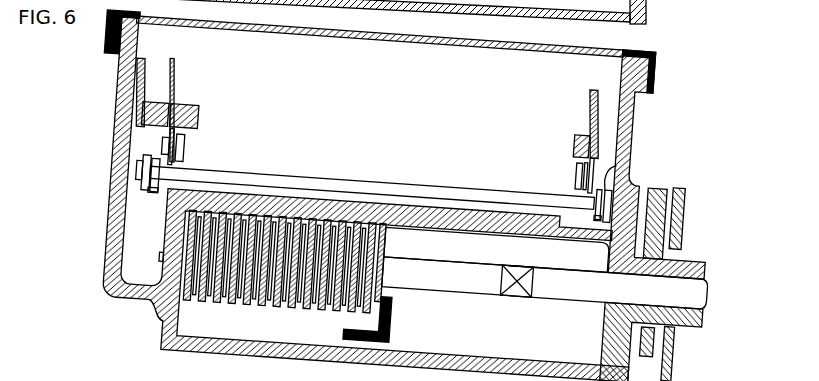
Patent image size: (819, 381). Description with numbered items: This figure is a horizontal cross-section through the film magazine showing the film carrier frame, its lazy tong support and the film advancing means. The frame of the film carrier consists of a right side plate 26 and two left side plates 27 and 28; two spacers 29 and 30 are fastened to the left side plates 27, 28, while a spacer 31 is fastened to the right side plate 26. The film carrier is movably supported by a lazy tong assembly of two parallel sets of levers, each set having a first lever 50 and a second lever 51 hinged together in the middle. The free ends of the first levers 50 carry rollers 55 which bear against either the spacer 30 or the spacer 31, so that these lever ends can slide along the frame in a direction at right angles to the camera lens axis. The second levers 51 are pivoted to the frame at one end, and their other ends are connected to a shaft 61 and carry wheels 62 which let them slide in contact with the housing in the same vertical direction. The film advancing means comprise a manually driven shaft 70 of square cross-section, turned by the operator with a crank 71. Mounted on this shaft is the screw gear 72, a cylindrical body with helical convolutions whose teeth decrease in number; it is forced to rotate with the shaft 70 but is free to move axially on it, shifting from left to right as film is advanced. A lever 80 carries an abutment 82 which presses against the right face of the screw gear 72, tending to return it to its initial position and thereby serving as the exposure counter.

The right side plate 26 is at (601, 60).
The left side plate 27 is at (178, 57).
The left side plate 28 is at (144, 58).
The spacer 29 is at (161, 100).
The spacer 30 is at (189, 97).
The spacer 31 is at (590, 103).
The first lever 50 is at (195, 143).
The second lever 51 is at (162, 192).
The roller 55 is at (181, 131).
The shaft 61 is at (310, 152).
The wheel 62 is at (158, 154).
The manually driven shaft 70 is at (491, 268).
The crank 71 is at (719, 223).
The screw gear 72 is at (290, 296).
The lever 80 is at (385, 320).
The abutment 82 is at (414, 314).